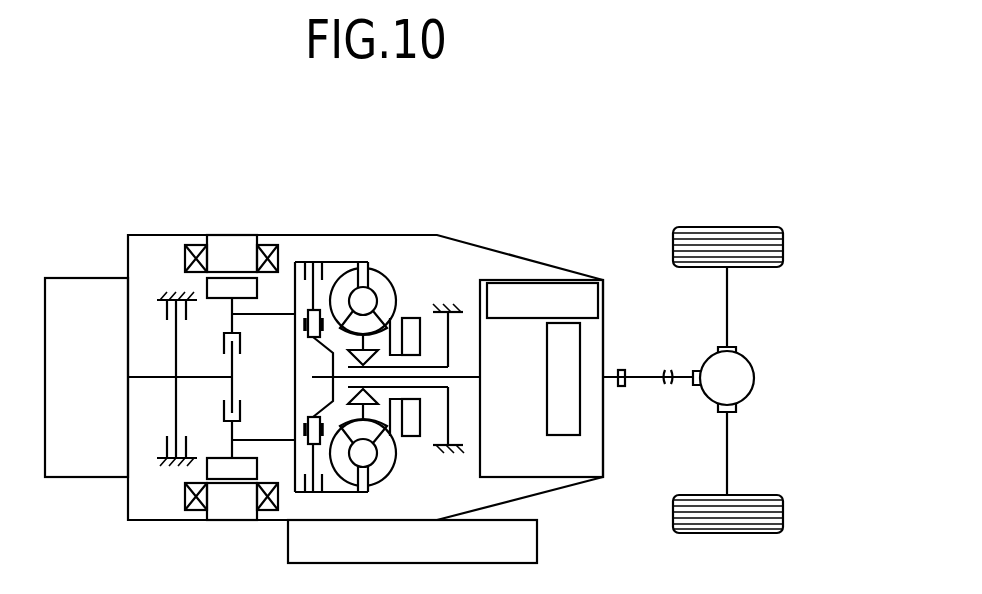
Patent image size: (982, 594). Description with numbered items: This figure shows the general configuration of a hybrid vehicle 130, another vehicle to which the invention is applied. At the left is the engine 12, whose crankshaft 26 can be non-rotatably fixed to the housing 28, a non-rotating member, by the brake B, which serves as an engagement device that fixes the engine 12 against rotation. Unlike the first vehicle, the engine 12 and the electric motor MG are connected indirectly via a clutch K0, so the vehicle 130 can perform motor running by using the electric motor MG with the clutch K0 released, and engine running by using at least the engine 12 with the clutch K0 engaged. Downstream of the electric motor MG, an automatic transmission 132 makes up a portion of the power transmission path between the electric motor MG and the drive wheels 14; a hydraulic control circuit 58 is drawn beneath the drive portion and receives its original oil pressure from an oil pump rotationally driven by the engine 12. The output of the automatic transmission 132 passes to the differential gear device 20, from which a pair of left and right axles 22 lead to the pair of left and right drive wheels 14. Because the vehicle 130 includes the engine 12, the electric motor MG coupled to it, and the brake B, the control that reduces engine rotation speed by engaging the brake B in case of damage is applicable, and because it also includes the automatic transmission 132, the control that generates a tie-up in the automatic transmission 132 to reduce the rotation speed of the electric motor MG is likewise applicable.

The hybrid vehicle 130 is at (549, 148).
The engine 12 is at (63, 284).
The crankshaft 26 is at (152, 376).
The housing 28 is at (168, 296).
The brake B is at (165, 441).
The electric motor MG is at (231, 377).
The clutch K0 is at (240, 411).
The automatic transmission 132 is at (593, 329).
The hydraulic control circuit 58 is at (537, 532).
The differential gear device 20 is at (740, 367).
The axles 22 is at (727, 306).
The drive wheels 14 is at (673, 247).